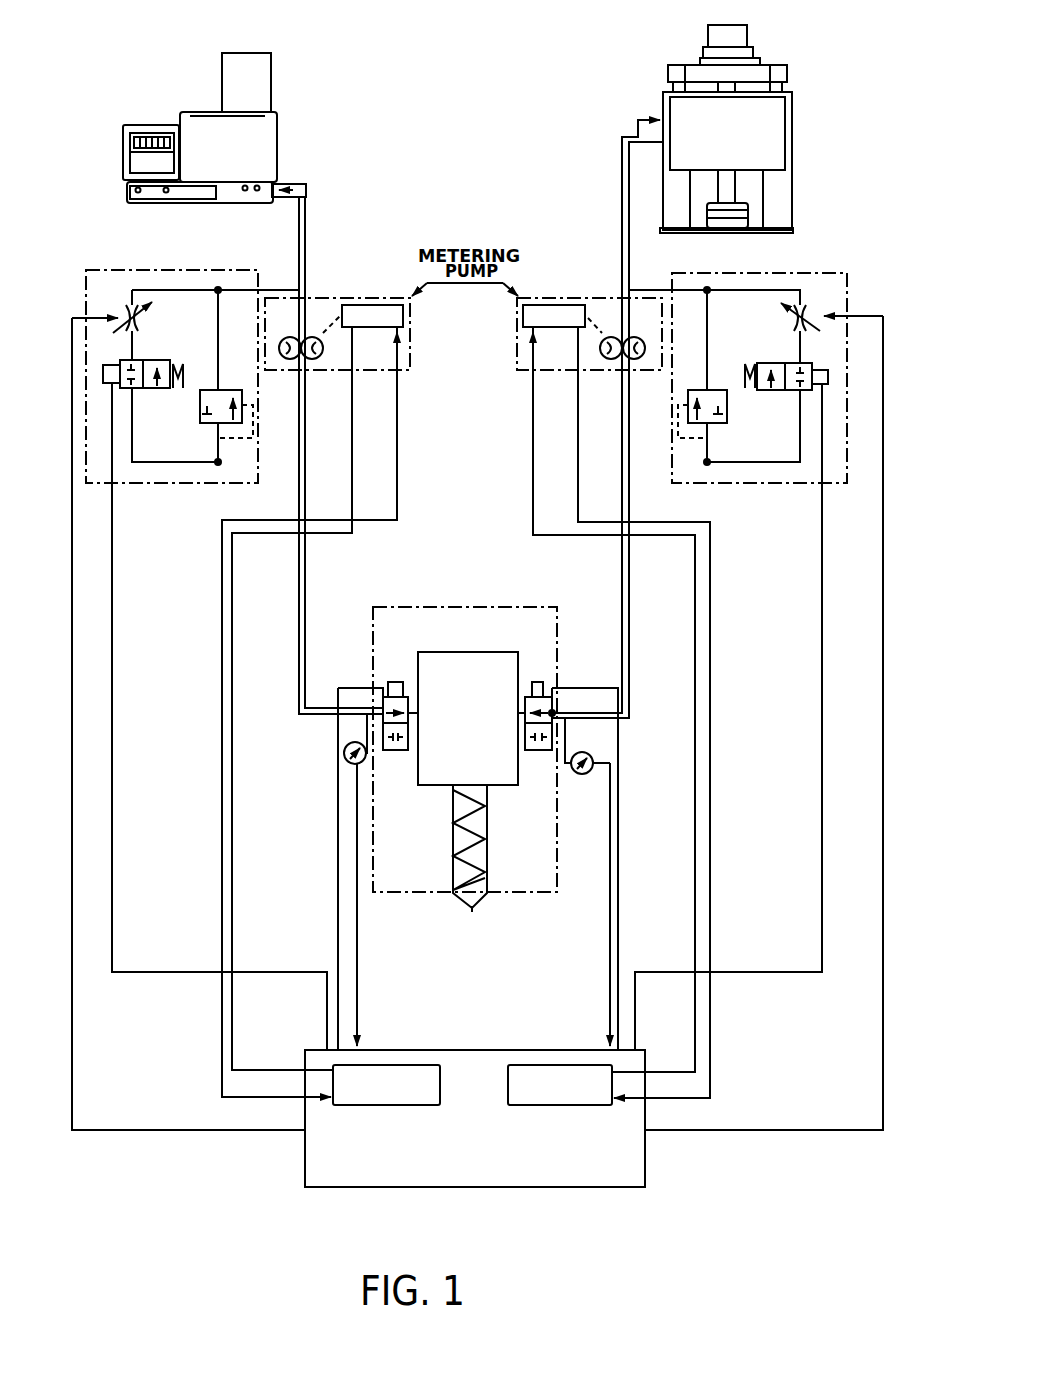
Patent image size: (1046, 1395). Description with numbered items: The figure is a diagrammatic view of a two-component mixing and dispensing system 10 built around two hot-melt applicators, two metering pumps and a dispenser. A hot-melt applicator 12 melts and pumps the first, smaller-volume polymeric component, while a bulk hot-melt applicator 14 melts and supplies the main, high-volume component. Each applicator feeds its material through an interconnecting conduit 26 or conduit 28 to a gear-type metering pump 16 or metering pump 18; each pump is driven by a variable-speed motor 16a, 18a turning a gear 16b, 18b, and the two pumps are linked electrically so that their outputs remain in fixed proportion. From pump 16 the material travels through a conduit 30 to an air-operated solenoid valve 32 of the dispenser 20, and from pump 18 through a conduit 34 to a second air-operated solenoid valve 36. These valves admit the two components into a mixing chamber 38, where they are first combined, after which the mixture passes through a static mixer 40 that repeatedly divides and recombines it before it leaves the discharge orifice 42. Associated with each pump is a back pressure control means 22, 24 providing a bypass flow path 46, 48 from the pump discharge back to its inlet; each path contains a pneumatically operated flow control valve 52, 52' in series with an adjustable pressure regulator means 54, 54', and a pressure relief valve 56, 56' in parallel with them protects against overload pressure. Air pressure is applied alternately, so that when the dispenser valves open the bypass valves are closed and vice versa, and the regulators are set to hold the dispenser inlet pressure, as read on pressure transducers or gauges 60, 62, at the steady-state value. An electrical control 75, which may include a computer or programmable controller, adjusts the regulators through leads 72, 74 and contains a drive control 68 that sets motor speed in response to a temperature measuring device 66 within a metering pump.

The two-component mixing and dispensing system 10 is at (253, 1183).
The hot-melt applicator 12 is at (295, 114).
The bulk hot-melt applicator 14 is at (650, 90).
The metering pump 16 is at (365, 338).
The variable-speed motor 16a is at (372, 312).
The gear 16b is at (313, 362).
The metering pump 18 is at (568, 348).
The variable-speed motor 18a is at (556, 305).
The gear 18b is at (610, 365).
The dispenser 20 is at (478, 828).
The back pressure control means 22 is at (165, 400).
The back pressure control means 24 is at (782, 396).
The conduit 26 is at (305, 230).
The conduit 28 is at (622, 190).
The conduit 30 is at (306, 566).
The air-operated solenoid valve 32 is at (380, 697).
The conduit 34 is at (626, 587).
The air-operated solenoid valve 36 is at (554, 700).
The mixing chamber 38 is at (482, 723).
The static mixer 40 is at (457, 838).
The discharge orifice 42 is at (474, 914).
The bypass flow path 46 is at (220, 289).
The bypass flow path 48 is at (716, 258).
The pneumatically operated flow control valve 52 is at (143, 399).
The pneumatically operated flow control valve 52' is at (786, 400).
The adjustable pressure regulator means 54 is at (154, 317).
The adjustable pressure regulator means 54' is at (778, 319).
The pressure relief valve 56 is at (208, 425).
The pressure relief valve 56' is at (718, 426).
The pressure transducer or gauge 60 is at (352, 766).
The pressure transducer or gauge 62 is at (580, 775).
The temperature measuring device 66 is at (358, 930).
The drive control 68 is at (610, 930).
The lead 72 is at (72, 550).
The lead 74 is at (880, 772).
The electrical control 75 is at (610, 1188).